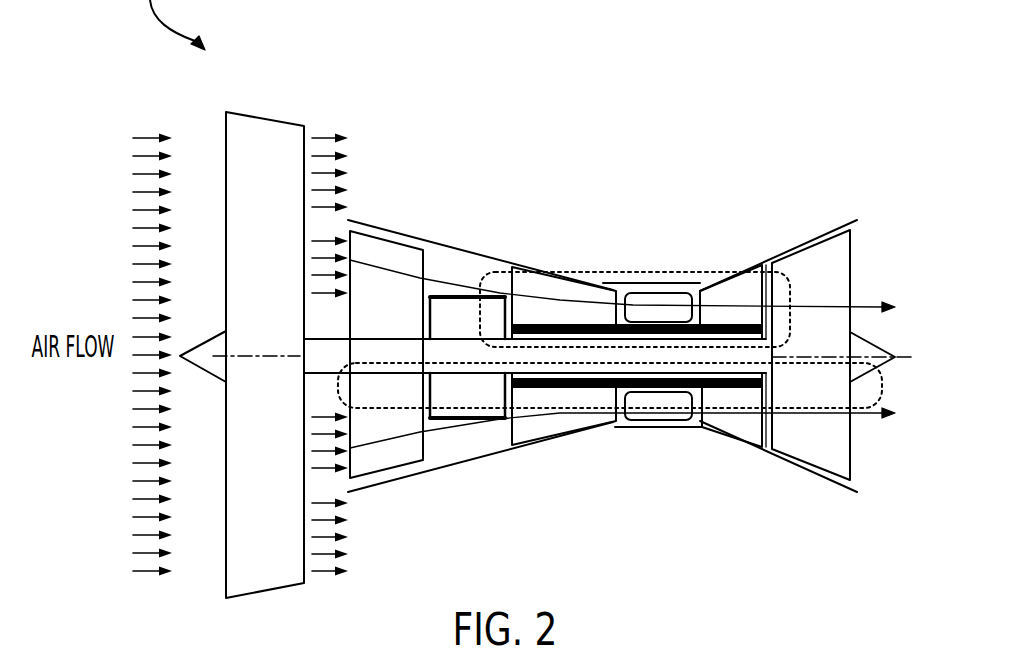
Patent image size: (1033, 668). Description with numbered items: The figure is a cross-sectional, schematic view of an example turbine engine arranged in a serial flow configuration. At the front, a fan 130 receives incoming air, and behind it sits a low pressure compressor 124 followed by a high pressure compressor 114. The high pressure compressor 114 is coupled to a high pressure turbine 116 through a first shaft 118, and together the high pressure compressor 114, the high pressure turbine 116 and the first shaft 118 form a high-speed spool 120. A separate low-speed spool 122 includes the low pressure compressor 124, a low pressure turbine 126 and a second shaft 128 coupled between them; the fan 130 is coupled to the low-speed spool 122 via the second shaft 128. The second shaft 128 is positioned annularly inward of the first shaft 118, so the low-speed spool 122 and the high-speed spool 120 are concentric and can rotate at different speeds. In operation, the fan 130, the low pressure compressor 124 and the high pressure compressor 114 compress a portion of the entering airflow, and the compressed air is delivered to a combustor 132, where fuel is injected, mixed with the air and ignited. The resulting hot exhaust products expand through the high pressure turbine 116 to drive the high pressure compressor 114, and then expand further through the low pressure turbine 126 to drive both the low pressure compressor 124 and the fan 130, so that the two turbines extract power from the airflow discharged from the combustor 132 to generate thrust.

The high pressure compressor 114 is at (559, 290).
The high pressure turbine 116 is at (729, 286).
The first shaft 118 is at (698, 320).
The high-speed spool 120 is at (788, 288).
The low-speed spool 122 is at (886, 392).
The low pressure compressor 124 is at (387, 475).
The low pressure turbine 126 is at (806, 437).
The second shaft 128 is at (567, 376).
The fan 130 is at (247, 113).
The combustor 132 is at (657, 422).